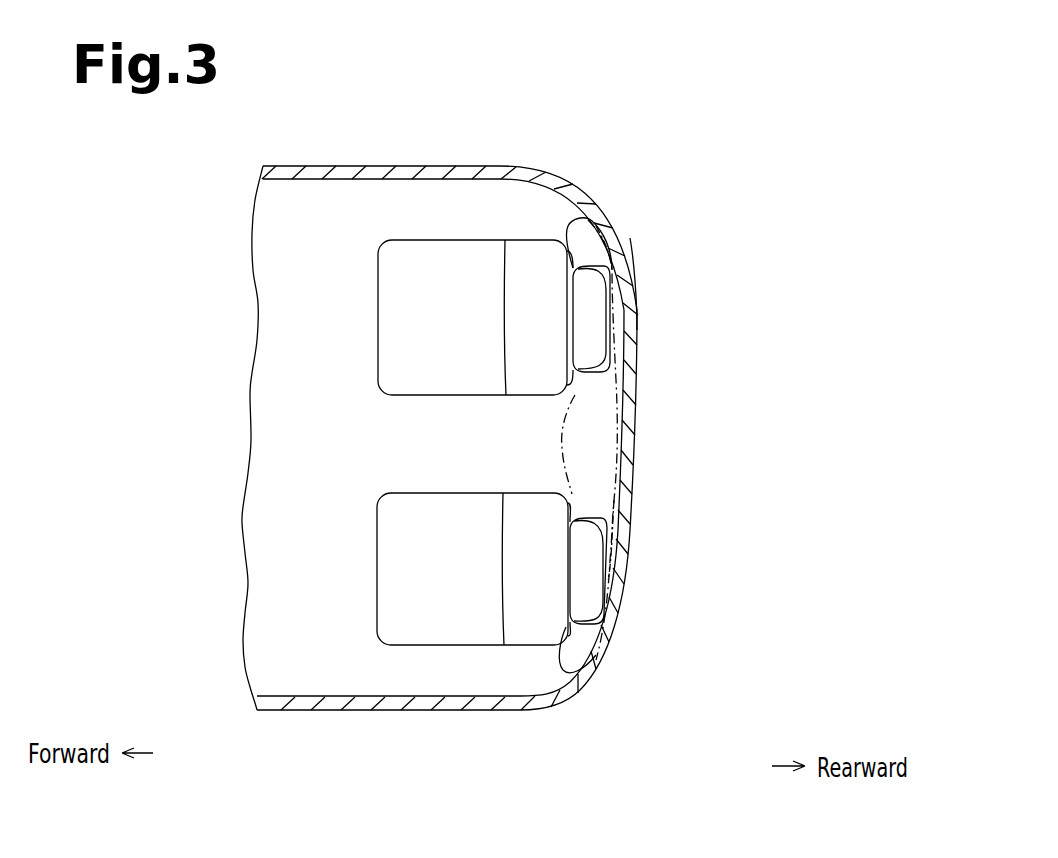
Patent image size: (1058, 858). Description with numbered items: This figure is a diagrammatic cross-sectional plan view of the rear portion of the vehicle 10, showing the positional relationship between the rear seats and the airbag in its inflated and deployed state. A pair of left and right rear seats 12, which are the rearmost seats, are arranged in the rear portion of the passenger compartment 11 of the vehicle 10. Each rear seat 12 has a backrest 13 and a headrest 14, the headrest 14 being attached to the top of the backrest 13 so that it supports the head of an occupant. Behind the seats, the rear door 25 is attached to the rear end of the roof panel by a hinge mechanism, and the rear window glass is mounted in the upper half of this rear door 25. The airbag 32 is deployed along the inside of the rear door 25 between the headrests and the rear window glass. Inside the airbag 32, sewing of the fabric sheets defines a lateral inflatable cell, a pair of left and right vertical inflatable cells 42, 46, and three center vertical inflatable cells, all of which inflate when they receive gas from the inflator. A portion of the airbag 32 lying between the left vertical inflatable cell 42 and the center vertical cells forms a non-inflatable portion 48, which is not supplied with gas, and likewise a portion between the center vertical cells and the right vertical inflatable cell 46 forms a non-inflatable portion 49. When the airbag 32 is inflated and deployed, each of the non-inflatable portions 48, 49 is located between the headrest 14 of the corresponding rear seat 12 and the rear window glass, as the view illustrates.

The vehicle 10 is at (575, 186).
The passenger compartment 11 is at (334, 463).
The rear seat 12 is at (392, 333).
The backrest 13 is at (538, 249).
The headrest 14 is at (601, 319).
The rear door 25 is at (637, 388).
The airbag 32 is at (637, 453).
The left vertical inflatable cell 42 is at (606, 660).
The right vertical inflatable cell 46 is at (622, 239).
The non-inflatable portion 48 is at (616, 558).
The non-inflatable portion 49 is at (632, 288).